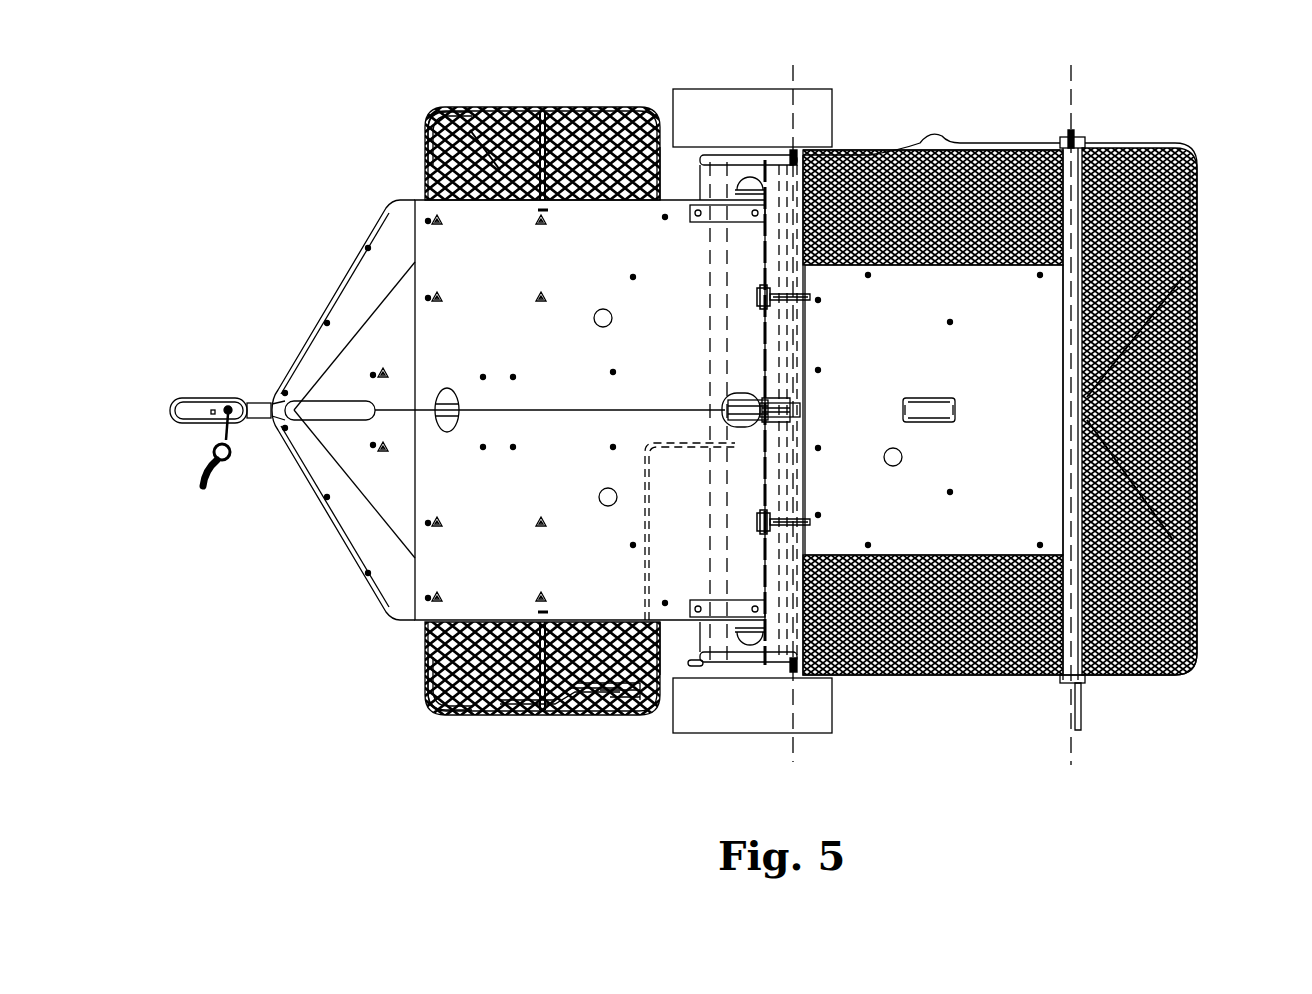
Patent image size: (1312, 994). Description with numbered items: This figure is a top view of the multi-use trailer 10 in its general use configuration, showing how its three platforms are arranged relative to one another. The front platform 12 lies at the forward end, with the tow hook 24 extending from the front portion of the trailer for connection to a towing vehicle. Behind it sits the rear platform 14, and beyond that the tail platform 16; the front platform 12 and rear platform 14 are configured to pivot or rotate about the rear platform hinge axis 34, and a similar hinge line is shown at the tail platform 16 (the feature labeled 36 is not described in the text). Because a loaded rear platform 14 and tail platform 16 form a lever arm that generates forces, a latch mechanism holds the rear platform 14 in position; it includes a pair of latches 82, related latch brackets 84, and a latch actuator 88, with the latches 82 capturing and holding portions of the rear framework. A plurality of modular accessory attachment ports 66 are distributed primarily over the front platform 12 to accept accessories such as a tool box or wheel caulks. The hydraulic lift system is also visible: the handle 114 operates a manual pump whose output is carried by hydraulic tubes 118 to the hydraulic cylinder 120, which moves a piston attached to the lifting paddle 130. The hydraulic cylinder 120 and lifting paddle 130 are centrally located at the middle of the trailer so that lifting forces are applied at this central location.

The multi-use trailer 10 is at (345, 148).
The front platform 12 is at (562, 272).
The rear platform 14 is at (969, 302).
The tail platform 16 is at (1048, 396).
The tow hook 24 is at (178, 400).
The rear platform hinge axis 34 is at (793, 762).
The rear pivot axis 36 is at (1070, 758).
The modular accessory attachment ports 66 is at (540, 594).
The latches 82 is at (812, 300).
The latch brackets 84 is at (757, 297).
The latch actuator 88 is at (694, 668).
The handle 114 is at (540, 703).
The hydraulic tubes 118 is at (640, 580).
The hydraulic cylinder 120 is at (735, 393).
The lifting paddle 130 is at (800, 410).